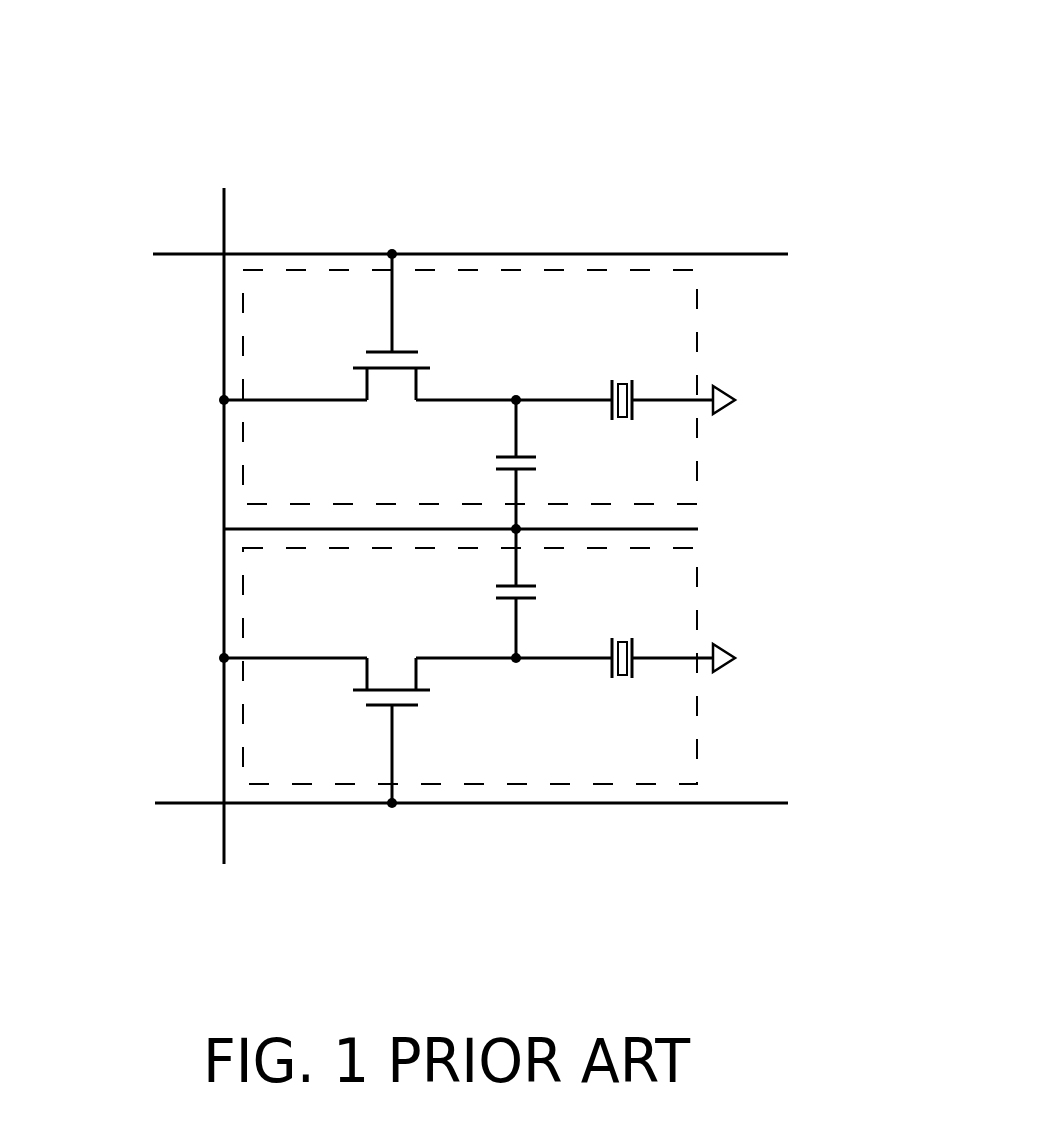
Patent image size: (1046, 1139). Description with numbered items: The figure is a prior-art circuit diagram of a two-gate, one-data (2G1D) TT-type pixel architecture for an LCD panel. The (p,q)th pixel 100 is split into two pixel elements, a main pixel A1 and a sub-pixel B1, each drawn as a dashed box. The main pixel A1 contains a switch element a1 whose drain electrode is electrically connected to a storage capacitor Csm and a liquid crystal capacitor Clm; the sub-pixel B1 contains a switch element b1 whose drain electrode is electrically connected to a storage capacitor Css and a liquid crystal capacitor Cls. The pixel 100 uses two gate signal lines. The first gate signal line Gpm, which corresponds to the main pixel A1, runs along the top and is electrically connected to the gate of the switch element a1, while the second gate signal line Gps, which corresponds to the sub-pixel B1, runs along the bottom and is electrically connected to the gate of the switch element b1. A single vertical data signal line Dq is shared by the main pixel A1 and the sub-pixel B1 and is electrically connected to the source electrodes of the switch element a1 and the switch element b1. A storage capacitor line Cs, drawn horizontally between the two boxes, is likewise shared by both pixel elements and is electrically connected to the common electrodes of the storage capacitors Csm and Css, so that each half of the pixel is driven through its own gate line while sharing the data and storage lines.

The pixel 100 is at (730, 128).
The data signal line Dq is at (224, 551).
The first gate signal line Gpm is at (420, 249).
The second gate signal line Gps is at (425, 802).
The storage capacitor line Cs is at (414, 527).
The main pixel A1 is at (698, 322).
The sub-pixel B1 is at (698, 733).
The switch element a1 is at (433, 353).
The switch element b1 is at (380, 643).
The liquid crystal capacitor Clm is at (621, 377).
The liquid crystal capacitor Cls is at (613, 636).
The storage capacitor Csm is at (476, 464).
The storage capacitor Css is at (486, 593).